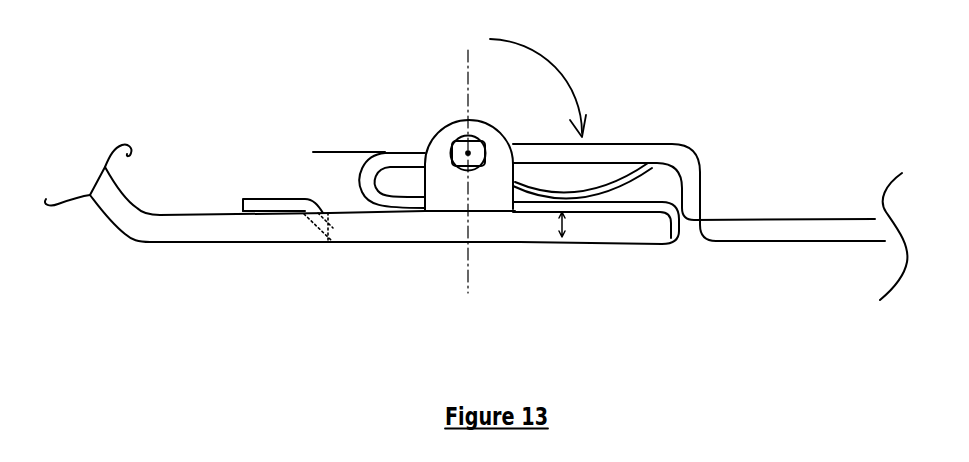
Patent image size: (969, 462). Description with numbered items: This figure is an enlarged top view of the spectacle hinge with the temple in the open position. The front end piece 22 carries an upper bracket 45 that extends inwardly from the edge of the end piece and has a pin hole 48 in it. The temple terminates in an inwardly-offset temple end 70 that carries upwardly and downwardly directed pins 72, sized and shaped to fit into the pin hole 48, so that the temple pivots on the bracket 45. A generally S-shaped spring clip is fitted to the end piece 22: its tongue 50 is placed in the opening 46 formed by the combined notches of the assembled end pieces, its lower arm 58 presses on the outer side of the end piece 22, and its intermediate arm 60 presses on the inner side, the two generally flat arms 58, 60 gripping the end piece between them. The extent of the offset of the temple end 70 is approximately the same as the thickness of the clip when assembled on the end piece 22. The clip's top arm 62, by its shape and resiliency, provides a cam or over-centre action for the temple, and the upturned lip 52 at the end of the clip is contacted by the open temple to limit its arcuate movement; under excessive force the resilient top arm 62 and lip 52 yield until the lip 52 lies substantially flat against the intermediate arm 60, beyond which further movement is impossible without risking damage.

The front end piece 22 is at (210, 225).
The upper bracket 45 is at (443, 132).
The opening 46 is at (302, 240).
The pin hole 48 is at (472, 137).
The tongue 50 is at (250, 198).
The upturned lip 52 is at (645, 165).
The lower arm 58 is at (503, 242).
The intermediate arm 60 is at (583, 195).
The top arm 62 is at (533, 190).
The inwardly-offset temple end 70 is at (675, 160).
The pin 72 is at (478, 146).